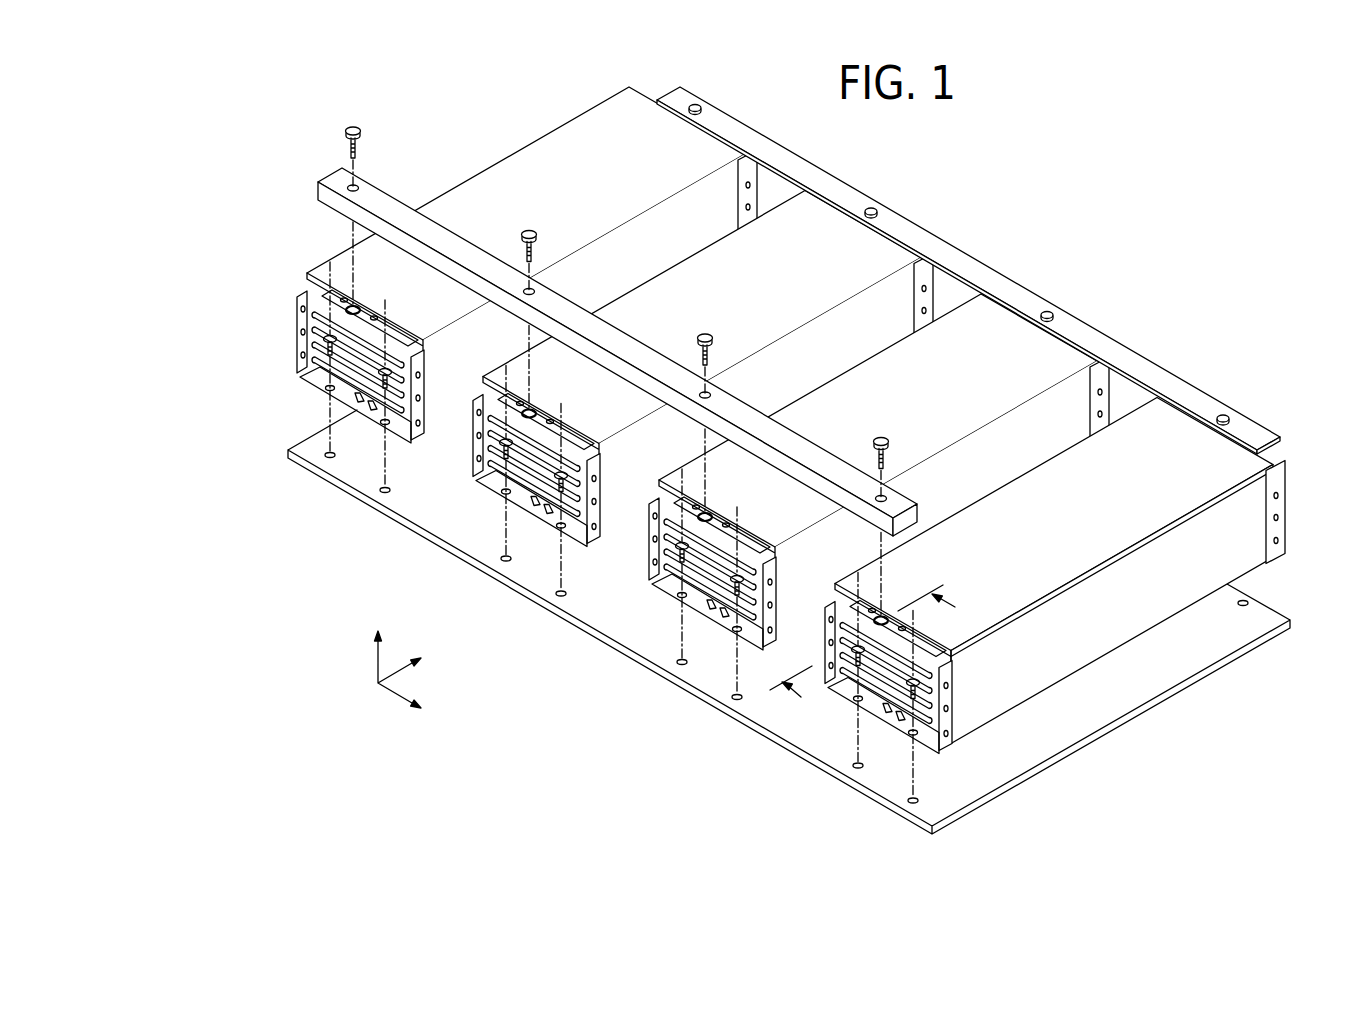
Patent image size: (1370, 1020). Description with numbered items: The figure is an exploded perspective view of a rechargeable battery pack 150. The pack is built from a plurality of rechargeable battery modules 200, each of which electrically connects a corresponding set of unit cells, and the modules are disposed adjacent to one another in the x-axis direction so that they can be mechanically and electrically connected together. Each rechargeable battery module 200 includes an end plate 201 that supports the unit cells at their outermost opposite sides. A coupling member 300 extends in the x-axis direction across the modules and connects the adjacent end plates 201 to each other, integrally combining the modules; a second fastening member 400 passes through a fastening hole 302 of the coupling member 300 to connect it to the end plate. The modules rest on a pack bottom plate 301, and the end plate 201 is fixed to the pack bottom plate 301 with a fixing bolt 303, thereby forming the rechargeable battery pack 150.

The rechargeable battery pack 150 is at (1043, 187).
The rechargeable battery module 200 is at (747, 445).
The end plate 201 is at (293, 331).
The coupling member 300 is at (327, 193).
The pack bottom plate 301 is at (628, 647).
The fastening hole 302 is at (359, 186).
The fixing bolt 303 is at (318, 381).
The second fastening member 400 is at (359, 129).